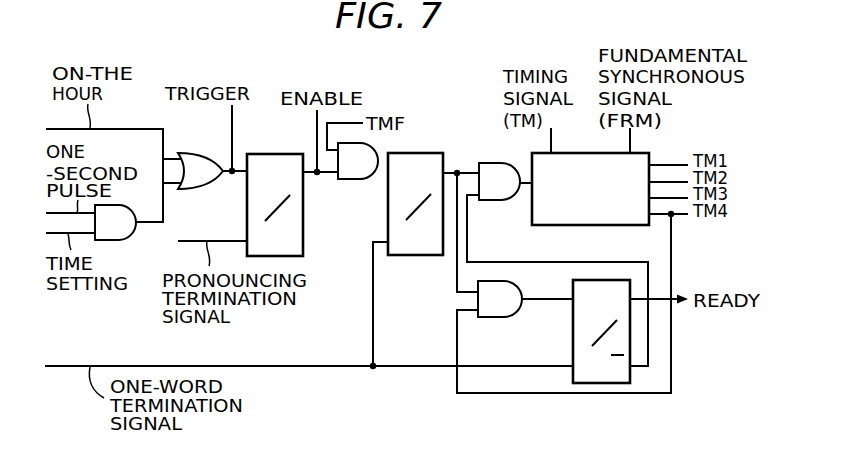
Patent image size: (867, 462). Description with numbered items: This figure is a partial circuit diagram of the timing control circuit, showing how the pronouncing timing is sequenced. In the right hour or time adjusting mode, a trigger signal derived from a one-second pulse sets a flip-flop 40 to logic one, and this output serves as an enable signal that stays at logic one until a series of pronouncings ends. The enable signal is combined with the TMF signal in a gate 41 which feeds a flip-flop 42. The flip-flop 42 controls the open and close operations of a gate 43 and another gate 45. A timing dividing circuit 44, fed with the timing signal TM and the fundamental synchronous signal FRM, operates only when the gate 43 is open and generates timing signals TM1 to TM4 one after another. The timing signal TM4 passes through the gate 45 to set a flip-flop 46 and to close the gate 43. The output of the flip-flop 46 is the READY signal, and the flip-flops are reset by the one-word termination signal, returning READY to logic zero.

The flip-flop 40 is at (303, 207).
The AND gate 41 is at (345, 180).
The flip-flop 42 is at (399, 256).
The gate 43 is at (490, 200).
The timing dividing circuit 44 is at (607, 226).
The gate 45 is at (500, 318).
The flip-flop 46 is at (573, 311).